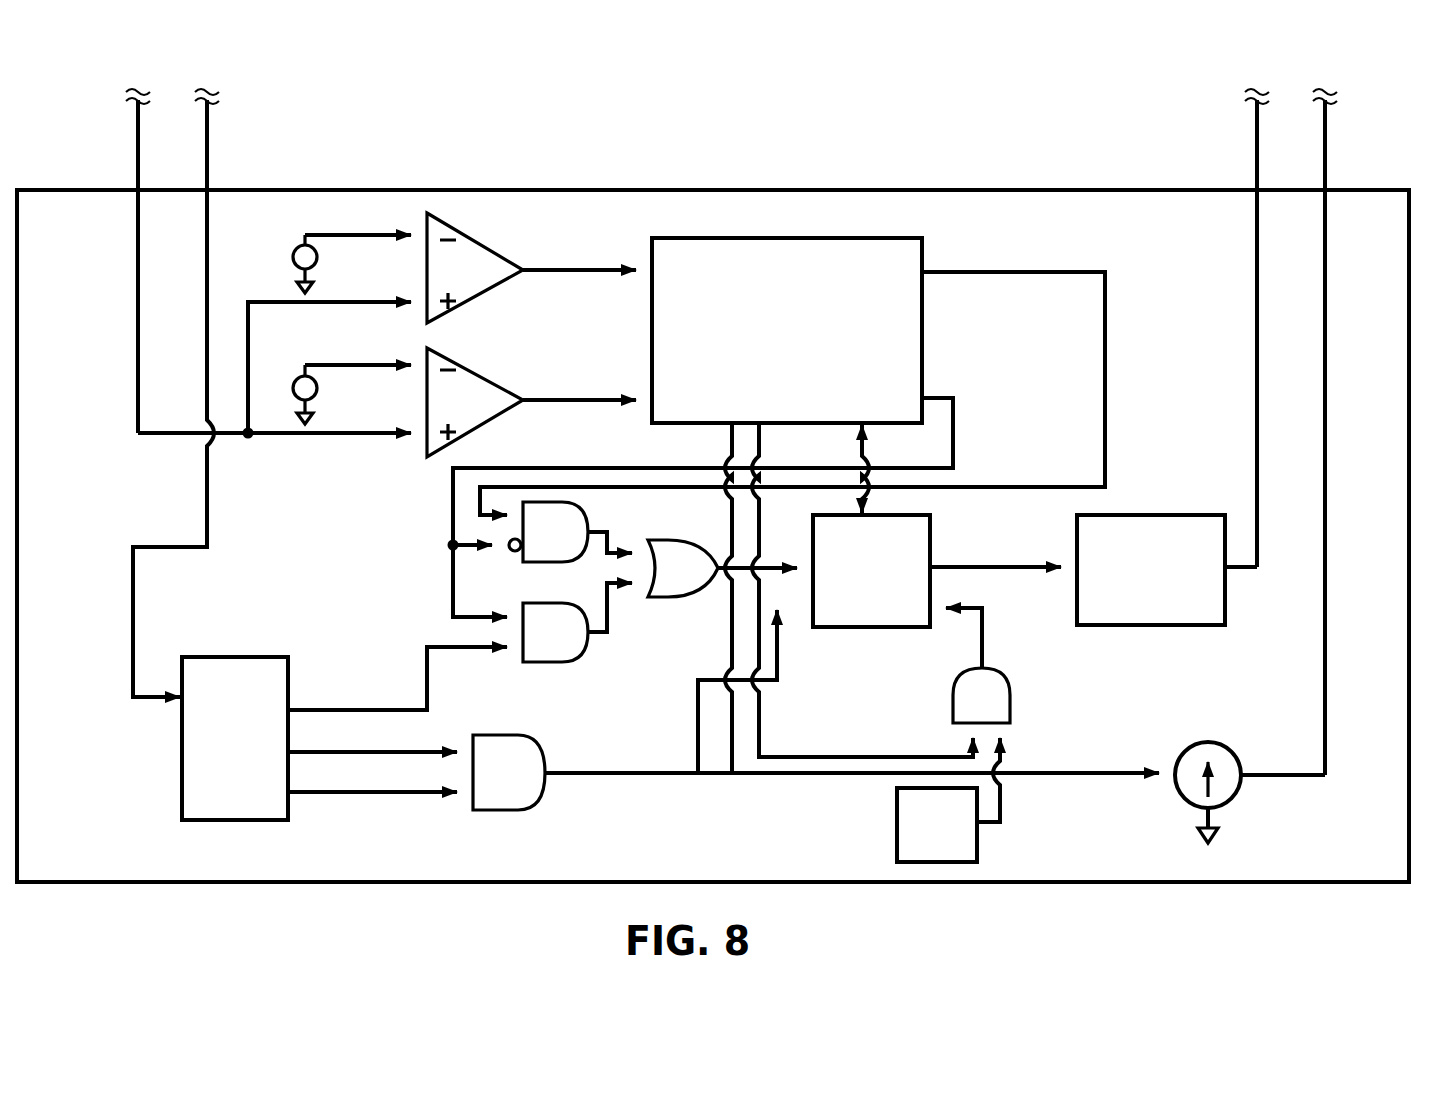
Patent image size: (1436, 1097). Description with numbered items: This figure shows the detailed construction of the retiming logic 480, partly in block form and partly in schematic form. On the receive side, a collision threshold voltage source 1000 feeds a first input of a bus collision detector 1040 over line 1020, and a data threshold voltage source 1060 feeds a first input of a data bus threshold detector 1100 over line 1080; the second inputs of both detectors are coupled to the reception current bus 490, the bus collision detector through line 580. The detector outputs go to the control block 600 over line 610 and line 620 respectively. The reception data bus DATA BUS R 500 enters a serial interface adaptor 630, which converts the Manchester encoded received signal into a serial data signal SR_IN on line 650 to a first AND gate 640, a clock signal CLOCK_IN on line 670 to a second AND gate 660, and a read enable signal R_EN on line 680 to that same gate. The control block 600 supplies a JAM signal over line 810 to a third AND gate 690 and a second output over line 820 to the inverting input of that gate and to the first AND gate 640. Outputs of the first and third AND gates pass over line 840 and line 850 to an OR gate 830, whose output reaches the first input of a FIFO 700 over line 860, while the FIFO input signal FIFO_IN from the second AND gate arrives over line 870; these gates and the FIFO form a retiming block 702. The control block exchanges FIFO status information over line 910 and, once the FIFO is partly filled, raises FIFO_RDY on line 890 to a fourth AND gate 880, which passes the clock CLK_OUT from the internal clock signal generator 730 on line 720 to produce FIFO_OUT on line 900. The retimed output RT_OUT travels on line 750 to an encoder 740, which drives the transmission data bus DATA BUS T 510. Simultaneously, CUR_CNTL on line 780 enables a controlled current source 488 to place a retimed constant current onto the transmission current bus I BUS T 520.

The retiming logic 480 is at (580, 190).
The controlled current source 488 is at (1210, 745).
The reception current bus 490 is at (135, 158).
The reception data bus DATA BUS R 500 is at (209, 150).
The transmission data bus DATA BUS T 510 is at (1255, 157).
The transmission current bus I BUS T 520 is at (1327, 157).
The line 580 is at (262, 280).
The control block 600 is at (758, 238).
The line 610 is at (596, 273).
The line 620 is at (574, 405).
The serial interface adaptor 630 is at (215, 657).
The first AND gate 640 is at (556, 665).
The line 650 is at (312, 708).
The second AND gate 660 is at (510, 812).
The line 670 is at (406, 750).
The line 680 is at (360, 796).
The third AND gate 690 is at (580, 503).
The FIFO 700 is at (853, 629).
The retiming block 702 is at (565, 870).
The line 720 is at (1002, 818).
The internal clock signal generator 730 is at (897, 840).
The encoder 740 is at (1185, 627).
The line 750 is at (1020, 570).
The line 780 is at (726, 788).
The line 810 is at (1107, 298).
The line 820 is at (955, 446).
The OR gate 830 is at (678, 541).
The line 840 is at (610, 622).
The line 850 is at (602, 556).
The line 860 is at (715, 580).
The line 870 is at (604, 777).
The fourth AND gate 880 is at (1012, 704).
The line 890 is at (780, 755).
The line 900 is at (980, 668).
The line 910 is at (858, 446).
The collision threshold voltage source 1000 is at (293, 252).
The line 1020 is at (326, 236).
The bus collision detector 1040 is at (480, 300).
The data threshold voltage source 1060 is at (293, 383).
The line 1080 is at (340, 360).
The data bus threshold detector 1100 is at (494, 355).